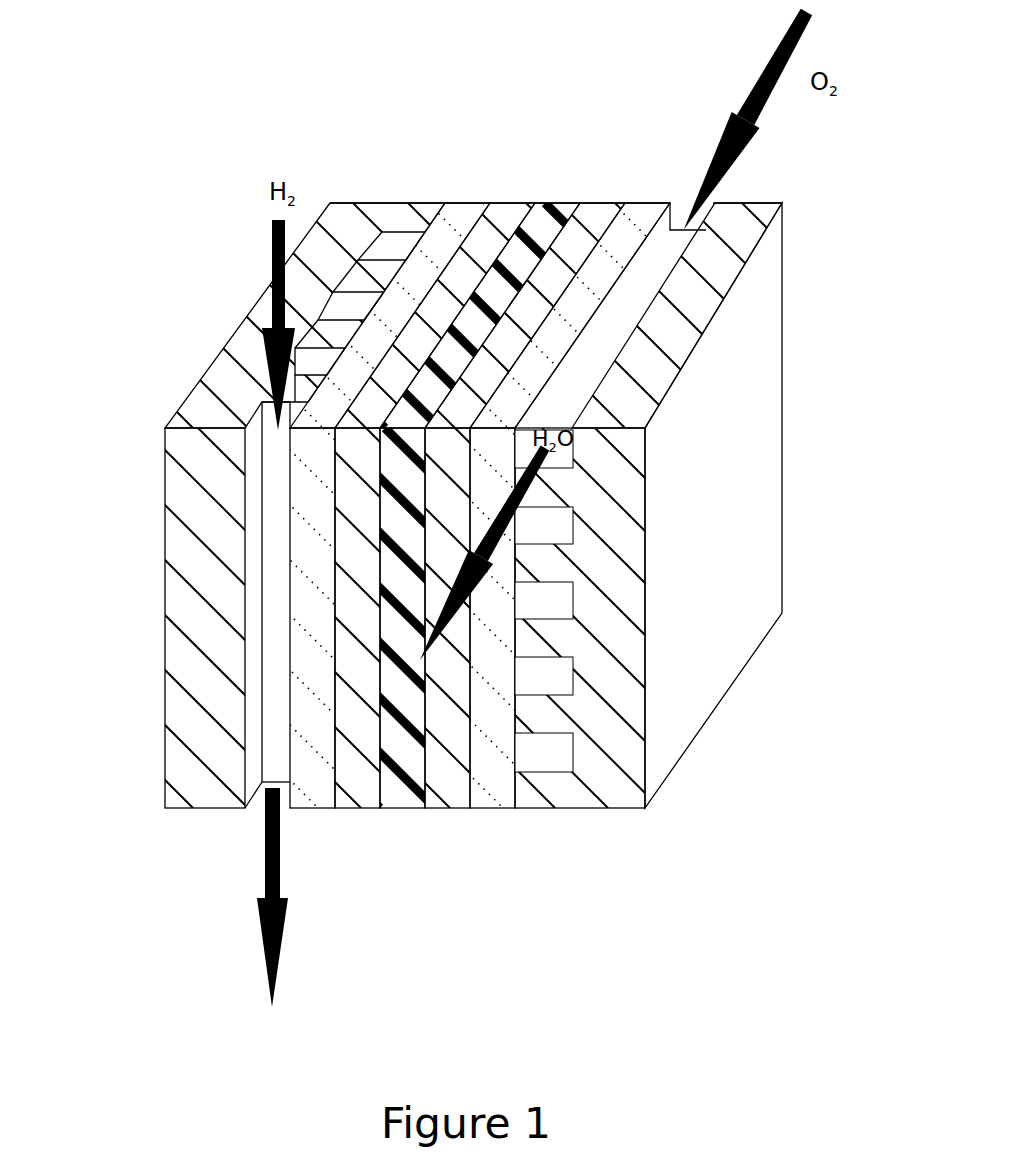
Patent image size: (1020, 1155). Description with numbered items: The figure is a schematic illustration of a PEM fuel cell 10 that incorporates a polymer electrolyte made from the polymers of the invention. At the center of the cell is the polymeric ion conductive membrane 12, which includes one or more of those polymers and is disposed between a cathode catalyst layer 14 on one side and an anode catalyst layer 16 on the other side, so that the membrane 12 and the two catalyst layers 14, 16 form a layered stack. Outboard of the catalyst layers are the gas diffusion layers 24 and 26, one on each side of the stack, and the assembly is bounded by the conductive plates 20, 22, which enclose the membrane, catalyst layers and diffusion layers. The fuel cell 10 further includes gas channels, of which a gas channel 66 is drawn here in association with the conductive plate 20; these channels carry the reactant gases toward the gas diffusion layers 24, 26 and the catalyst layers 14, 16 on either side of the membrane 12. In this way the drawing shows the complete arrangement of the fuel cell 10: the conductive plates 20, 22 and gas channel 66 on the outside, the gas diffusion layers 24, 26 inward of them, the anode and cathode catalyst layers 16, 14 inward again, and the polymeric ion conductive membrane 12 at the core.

The PEM fuel cell 10 is at (230, 155).
The polymeric ion conductive membrane 12 is at (552, 217).
The cathode catalyst layer 14 is at (588, 220).
The anode catalyst layer 16 is at (505, 217).
The conductive plate 20 is at (575, 570).
The conductive plate 22 is at (215, 412).
The gas diffusion layer 24 is at (453, 220).
The gas diffusion layer 26 is at (643, 230).
The gas channel 66 is at (533, 678).